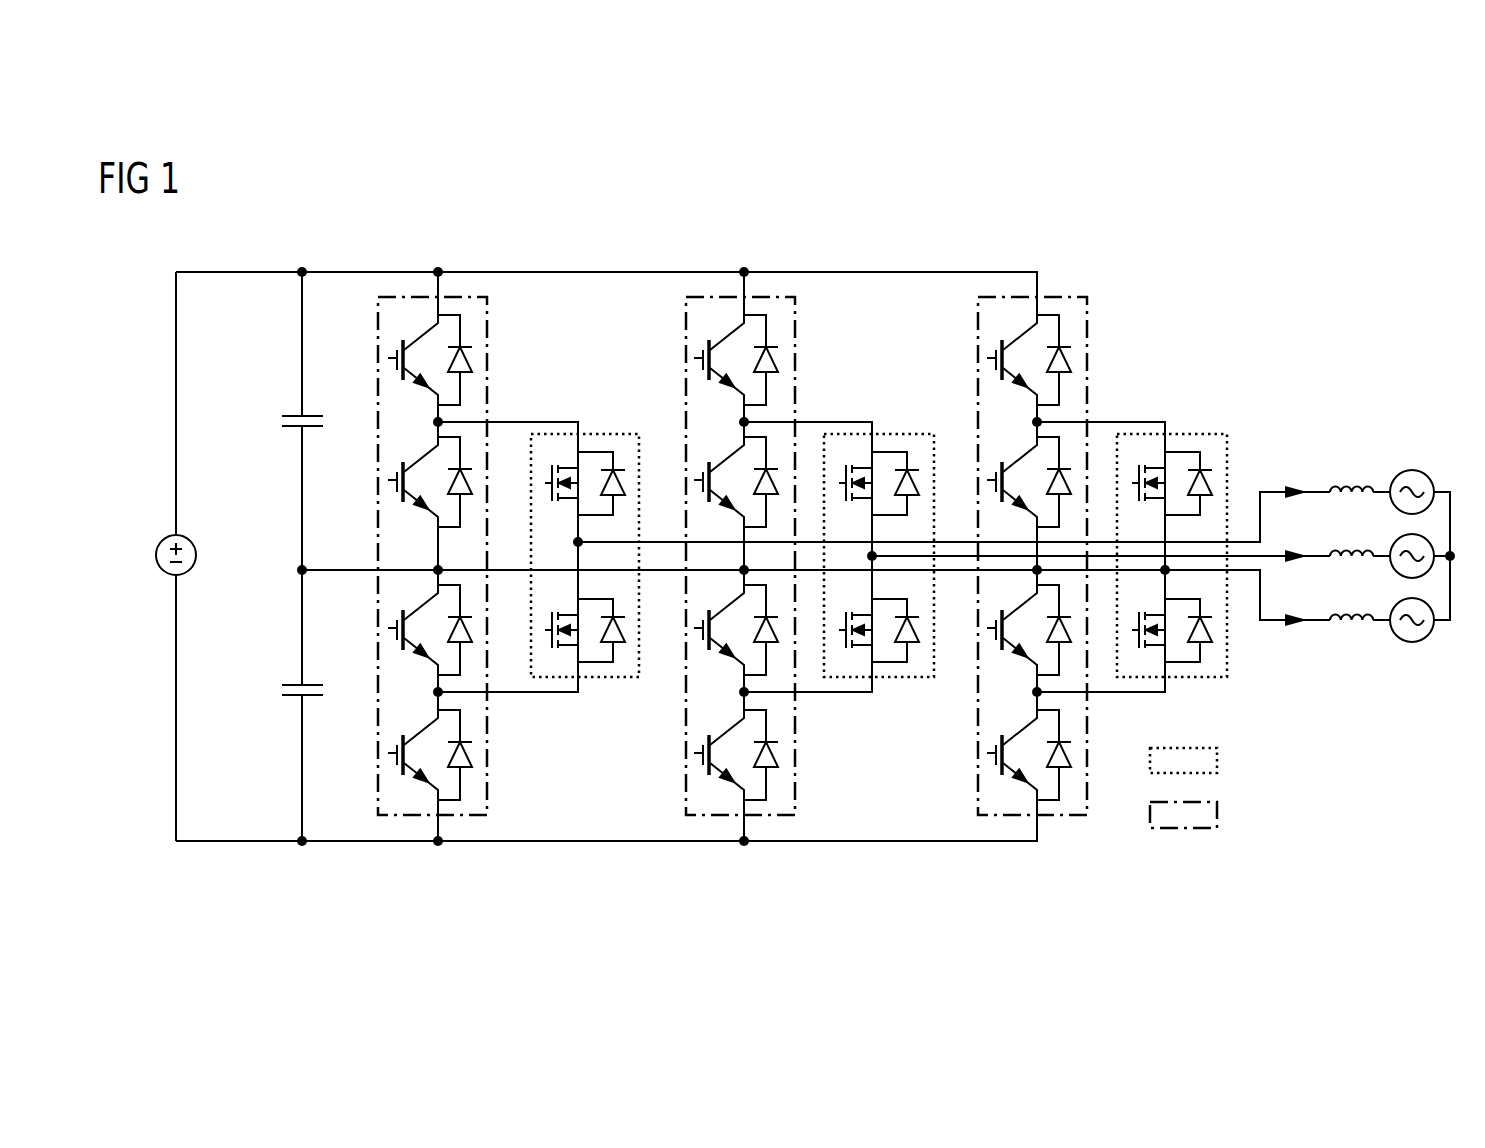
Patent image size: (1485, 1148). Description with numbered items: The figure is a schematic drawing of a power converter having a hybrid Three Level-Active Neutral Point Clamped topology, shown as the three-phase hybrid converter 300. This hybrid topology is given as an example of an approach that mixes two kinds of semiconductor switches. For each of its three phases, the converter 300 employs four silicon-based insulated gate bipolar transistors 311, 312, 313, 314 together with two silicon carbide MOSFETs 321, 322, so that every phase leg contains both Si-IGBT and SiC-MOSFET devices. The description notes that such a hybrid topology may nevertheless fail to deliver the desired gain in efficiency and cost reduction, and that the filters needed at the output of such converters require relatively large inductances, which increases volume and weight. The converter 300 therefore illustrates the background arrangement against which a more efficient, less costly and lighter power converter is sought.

The three-phase hybrid 3L-ANPC converter 300 is at (1270, 293).
The silicon-based insulated gate bipolar transistor 311 is at (392, 753).
The silicon-based insulated gate bipolar transistor 312 is at (392, 628).
The silicon-based insulated gate bipolar transistor 313 is at (392, 480).
The silicon-based insulated gate bipolar transistor 314 is at (392, 358).
The silicon carbide MOSFET 321 is at (600, 668).
The silicon carbide MOSFET 322 is at (599, 445).